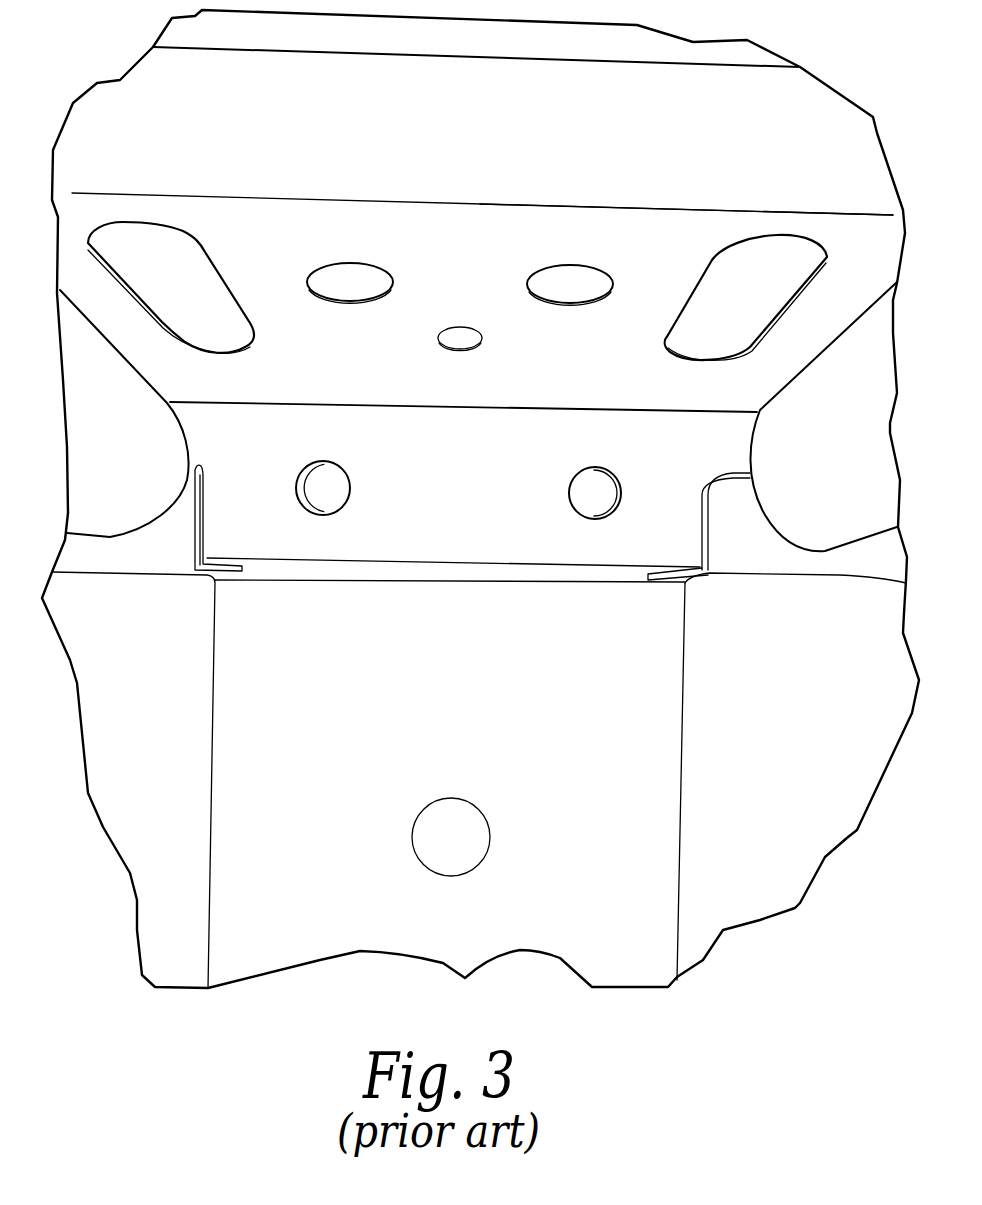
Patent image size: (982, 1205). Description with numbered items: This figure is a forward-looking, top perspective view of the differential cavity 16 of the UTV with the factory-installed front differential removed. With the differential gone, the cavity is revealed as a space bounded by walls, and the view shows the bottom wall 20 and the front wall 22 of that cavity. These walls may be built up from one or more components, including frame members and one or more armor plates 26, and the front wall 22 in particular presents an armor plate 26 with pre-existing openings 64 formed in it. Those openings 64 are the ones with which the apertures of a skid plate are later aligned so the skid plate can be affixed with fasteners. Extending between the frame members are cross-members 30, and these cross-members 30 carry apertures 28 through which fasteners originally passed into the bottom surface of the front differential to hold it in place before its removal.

The differential cavity 16 is at (572, 649).
The bottom wall 20 is at (352, 776).
The front wall 22 is at (492, 251).
The armor plate 26 is at (655, 257).
The apertures 28 is at (572, 497).
The cross-members 30 is at (455, 542).
The pre-existing openings 64 is at (347, 303).